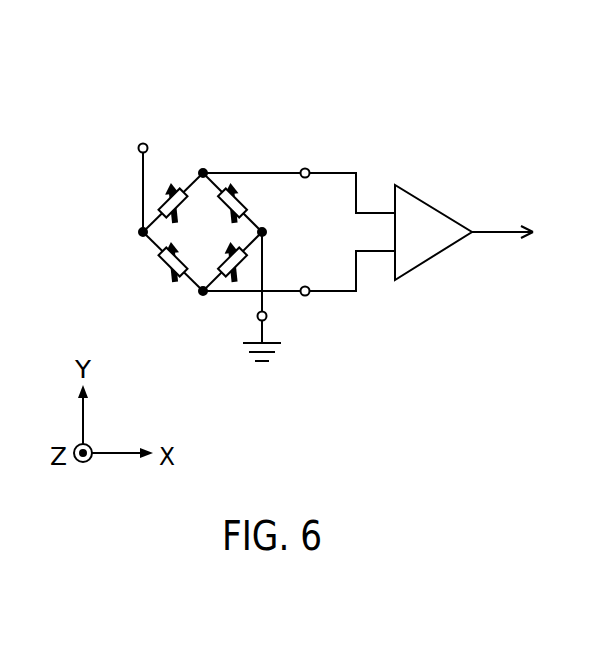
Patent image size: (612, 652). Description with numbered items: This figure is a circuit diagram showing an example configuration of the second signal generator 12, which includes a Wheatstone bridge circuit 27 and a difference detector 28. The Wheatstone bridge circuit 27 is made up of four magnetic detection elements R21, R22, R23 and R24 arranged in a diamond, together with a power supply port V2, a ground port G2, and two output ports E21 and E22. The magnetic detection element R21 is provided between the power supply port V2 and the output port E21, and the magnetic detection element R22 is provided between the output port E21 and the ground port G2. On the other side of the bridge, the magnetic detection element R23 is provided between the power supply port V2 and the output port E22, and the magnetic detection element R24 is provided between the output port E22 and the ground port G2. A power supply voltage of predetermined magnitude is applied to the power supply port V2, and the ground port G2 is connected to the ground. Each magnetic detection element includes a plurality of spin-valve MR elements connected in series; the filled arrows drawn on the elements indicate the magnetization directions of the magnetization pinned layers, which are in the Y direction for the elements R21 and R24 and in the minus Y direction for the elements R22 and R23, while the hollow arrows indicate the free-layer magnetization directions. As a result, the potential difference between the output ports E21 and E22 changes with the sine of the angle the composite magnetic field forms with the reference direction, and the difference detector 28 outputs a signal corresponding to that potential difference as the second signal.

The second signal generator 12 is at (294, 73).
The Wheatstone bridge circuit 27 is at (230, 163).
The difference detector 28 is at (432, 202).
The magnetic detection element R21 is at (171, 188).
The magnetic detection element R22 is at (256, 200).
The magnetic detection element R23 is at (165, 279).
The magnetic detection element R24 is at (263, 261).
The power supply port V2 is at (144, 172).
The output port E21 is at (299, 175).
The output port E22 is at (299, 291).
The ground port G2 is at (254, 296).